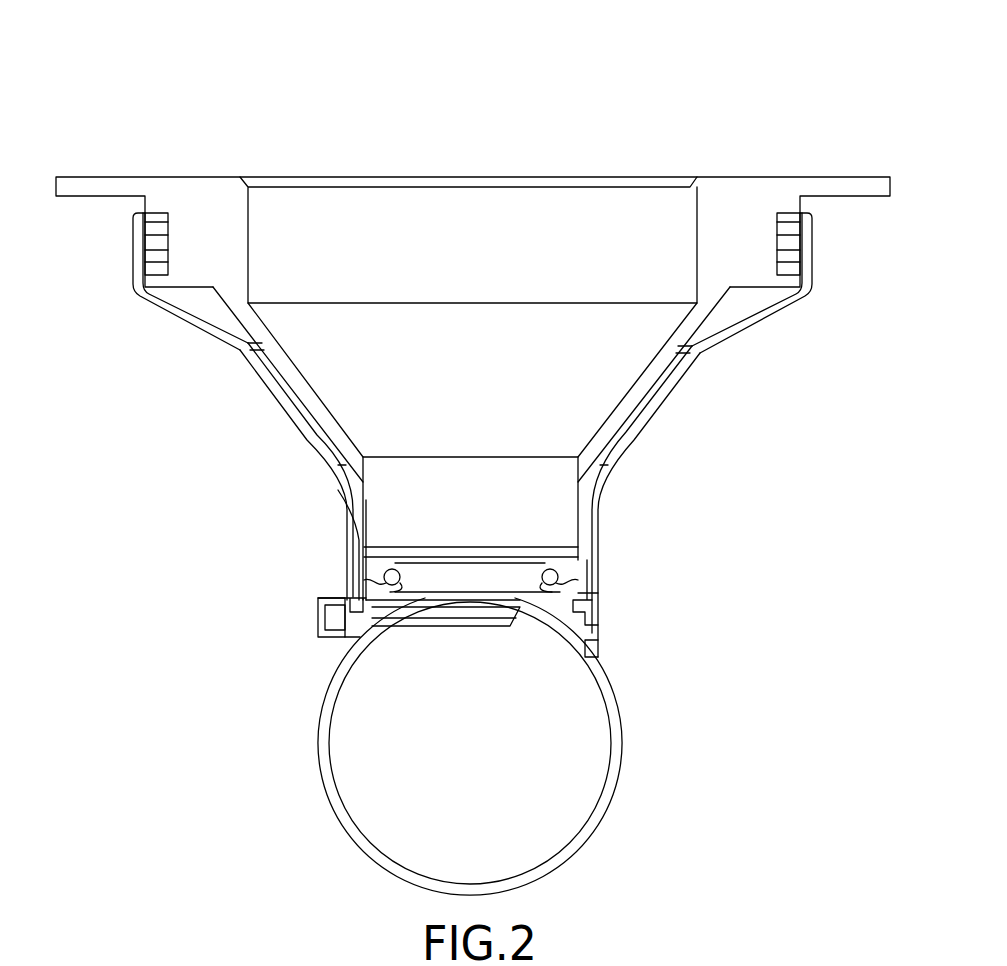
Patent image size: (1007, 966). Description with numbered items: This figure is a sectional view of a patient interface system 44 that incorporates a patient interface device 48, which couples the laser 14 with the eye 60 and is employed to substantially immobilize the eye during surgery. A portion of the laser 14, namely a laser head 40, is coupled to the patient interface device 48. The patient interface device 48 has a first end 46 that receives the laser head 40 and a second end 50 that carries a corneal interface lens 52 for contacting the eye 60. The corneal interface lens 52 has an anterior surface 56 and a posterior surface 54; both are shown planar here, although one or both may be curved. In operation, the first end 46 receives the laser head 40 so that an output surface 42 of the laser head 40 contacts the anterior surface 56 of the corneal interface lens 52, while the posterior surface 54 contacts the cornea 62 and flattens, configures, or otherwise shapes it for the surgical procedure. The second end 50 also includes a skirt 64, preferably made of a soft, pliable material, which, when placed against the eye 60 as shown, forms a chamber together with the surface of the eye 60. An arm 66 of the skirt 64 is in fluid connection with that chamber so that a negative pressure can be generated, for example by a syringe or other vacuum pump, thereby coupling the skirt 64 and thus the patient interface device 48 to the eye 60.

The laser 14 is at (222, 176).
The laser head 40 is at (632, 400).
The output surface 42 is at (538, 542).
The patient interface system 44 is at (237, 523).
The first end 46 is at (128, 262).
The patient interface device 48 is at (282, 402).
The second end 50 is at (343, 560).
The corneal interface lens 52 is at (537, 572).
The posterior surface 54 is at (530, 600).
The anterior surface 56 is at (465, 560).
The eye 60 is at (612, 803).
The cornea 62 is at (414, 612).
The skirt 64 is at (610, 644).
The arm 66 is at (327, 643).